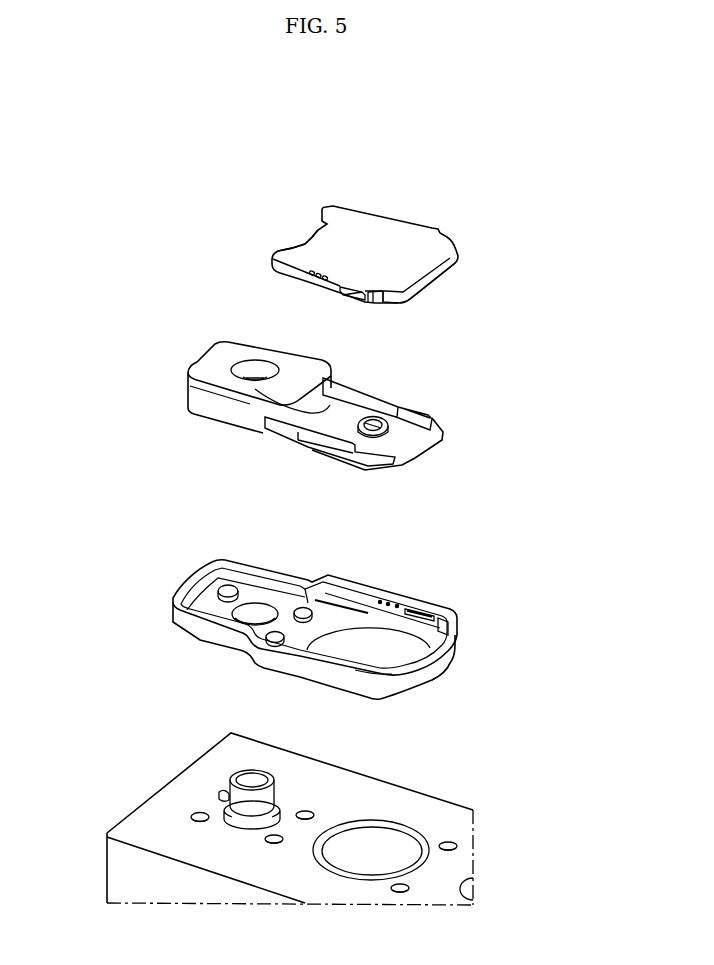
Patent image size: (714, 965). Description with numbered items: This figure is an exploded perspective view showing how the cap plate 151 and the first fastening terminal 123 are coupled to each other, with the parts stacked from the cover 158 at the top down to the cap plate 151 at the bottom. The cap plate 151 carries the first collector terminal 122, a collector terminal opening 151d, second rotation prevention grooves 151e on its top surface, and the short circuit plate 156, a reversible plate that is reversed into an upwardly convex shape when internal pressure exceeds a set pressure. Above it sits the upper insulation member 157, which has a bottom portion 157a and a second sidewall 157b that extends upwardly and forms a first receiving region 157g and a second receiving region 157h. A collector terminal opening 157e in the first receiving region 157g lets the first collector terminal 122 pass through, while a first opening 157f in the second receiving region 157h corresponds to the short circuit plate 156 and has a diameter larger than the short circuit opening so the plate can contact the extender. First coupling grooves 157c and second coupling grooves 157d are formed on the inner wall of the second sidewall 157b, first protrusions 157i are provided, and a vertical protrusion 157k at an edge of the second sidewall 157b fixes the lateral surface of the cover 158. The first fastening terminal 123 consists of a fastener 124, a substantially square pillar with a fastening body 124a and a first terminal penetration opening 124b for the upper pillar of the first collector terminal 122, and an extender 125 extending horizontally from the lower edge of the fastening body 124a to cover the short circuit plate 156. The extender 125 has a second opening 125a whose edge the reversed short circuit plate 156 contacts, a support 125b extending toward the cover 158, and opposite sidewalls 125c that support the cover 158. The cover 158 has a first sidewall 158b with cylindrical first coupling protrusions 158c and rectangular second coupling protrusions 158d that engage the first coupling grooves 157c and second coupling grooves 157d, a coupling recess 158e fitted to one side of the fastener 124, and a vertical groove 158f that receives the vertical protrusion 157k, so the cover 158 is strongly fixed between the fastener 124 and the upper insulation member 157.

The cover 158 is at (402, 226).
The first sidewall 158b is at (363, 294).
The first coupling protrusions 158c is at (320, 271).
The second coupling protrusions 158d is at (350, 286).
The coupling recess 158e is at (312, 233).
The vertical groove 158f is at (375, 289).
The first fastening terminal 123 is at (320, 393).
The fastener 124 is at (215, 356).
The fastening body 124a is at (198, 395).
The first terminal penetration opening 124b is at (253, 365).
The extender 125 is at (383, 419).
The second opening 125a is at (433, 418).
The support 125b is at (390, 431).
The opposite sidewalls 125c is at (312, 432).
The upper insulation member 157 is at (329, 631).
The bottom portion 157a is at (289, 626).
The second sidewall 157b is at (445, 658).
The first coupling grooves 157c is at (386, 597).
The second coupling grooves 157d is at (411, 607).
The collector terminal opening 157e is at (233, 612).
The first opening 157f is at (341, 639).
The first receiving region 157g is at (250, 580).
The second receiving region 157h is at (415, 641).
The first protrusions 157i is at (262, 637).
The vertical protrusion 157k is at (382, 673).
The cap plate 151 is at (311, 831).
The collector terminal opening 151d is at (221, 793).
The second rotation prevention grooves 151e is at (193, 816).
The first collector terminal 122 is at (243, 775).
The short circuit plate 156 is at (362, 868).